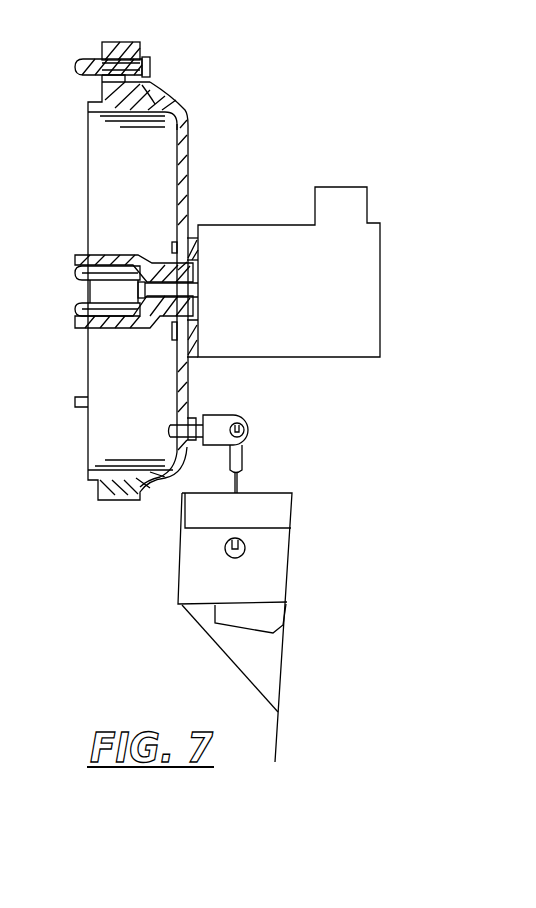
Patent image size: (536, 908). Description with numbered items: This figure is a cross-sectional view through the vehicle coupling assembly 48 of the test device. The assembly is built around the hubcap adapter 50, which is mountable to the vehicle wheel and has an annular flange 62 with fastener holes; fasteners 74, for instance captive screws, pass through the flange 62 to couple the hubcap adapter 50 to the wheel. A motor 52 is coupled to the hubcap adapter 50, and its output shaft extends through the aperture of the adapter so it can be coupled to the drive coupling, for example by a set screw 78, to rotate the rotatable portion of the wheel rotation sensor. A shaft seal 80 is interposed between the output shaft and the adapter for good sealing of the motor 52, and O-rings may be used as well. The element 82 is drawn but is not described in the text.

The vehicle coupling assembly 48 is at (75, 513).
The hubcap adapter 50 is at (205, 143).
The motor 52 is at (393, 212).
The annular flange 62 is at (142, 96).
The fasteners 74 is at (85, 65).
The set screw 78 is at (158, 318).
The shaft seal 80 is at (190, 237).
The cutting tool 82 is at (310, 592).